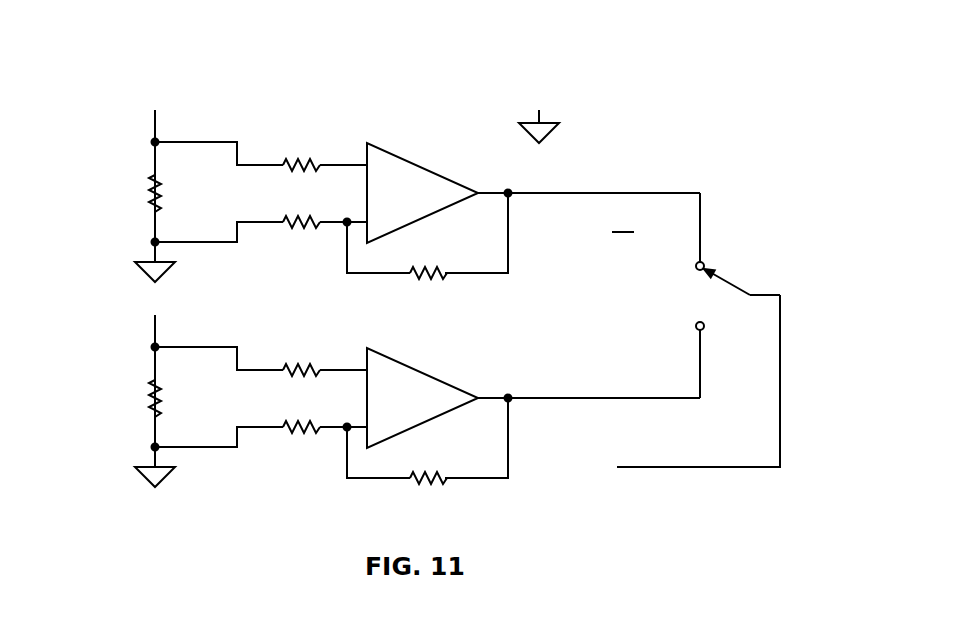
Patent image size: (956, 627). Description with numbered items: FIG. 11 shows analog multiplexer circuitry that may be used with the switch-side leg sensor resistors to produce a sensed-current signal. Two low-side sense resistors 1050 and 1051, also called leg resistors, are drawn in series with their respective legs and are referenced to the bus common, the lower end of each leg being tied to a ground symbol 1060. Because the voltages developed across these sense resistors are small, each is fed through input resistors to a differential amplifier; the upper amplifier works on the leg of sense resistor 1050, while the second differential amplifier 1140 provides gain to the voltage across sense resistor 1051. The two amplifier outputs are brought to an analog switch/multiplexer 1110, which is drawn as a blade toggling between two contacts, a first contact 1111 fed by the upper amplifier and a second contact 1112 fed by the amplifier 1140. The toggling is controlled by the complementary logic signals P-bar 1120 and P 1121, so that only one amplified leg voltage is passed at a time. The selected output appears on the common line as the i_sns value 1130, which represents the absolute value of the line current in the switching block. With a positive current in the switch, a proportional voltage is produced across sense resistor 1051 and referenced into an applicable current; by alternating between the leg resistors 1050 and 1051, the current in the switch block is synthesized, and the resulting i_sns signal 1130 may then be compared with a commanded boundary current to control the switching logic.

The sense resistor 1050 is at (155, 122).
The sense resistor 1051 is at (155, 327).
The ground 1060 is at (553, 117).
The analog switch/multiplexer 1110 is at (742, 289).
The first switch contact 1111 is at (704, 260).
The second switch contact 1112 is at (706, 324).
The logic signal P-bar 1120 is at (623, 222).
The logic signal P 1121 is at (622, 328).
The i_sns value 1130 is at (424, 142).
The differential amplifier 1140 is at (424, 357).